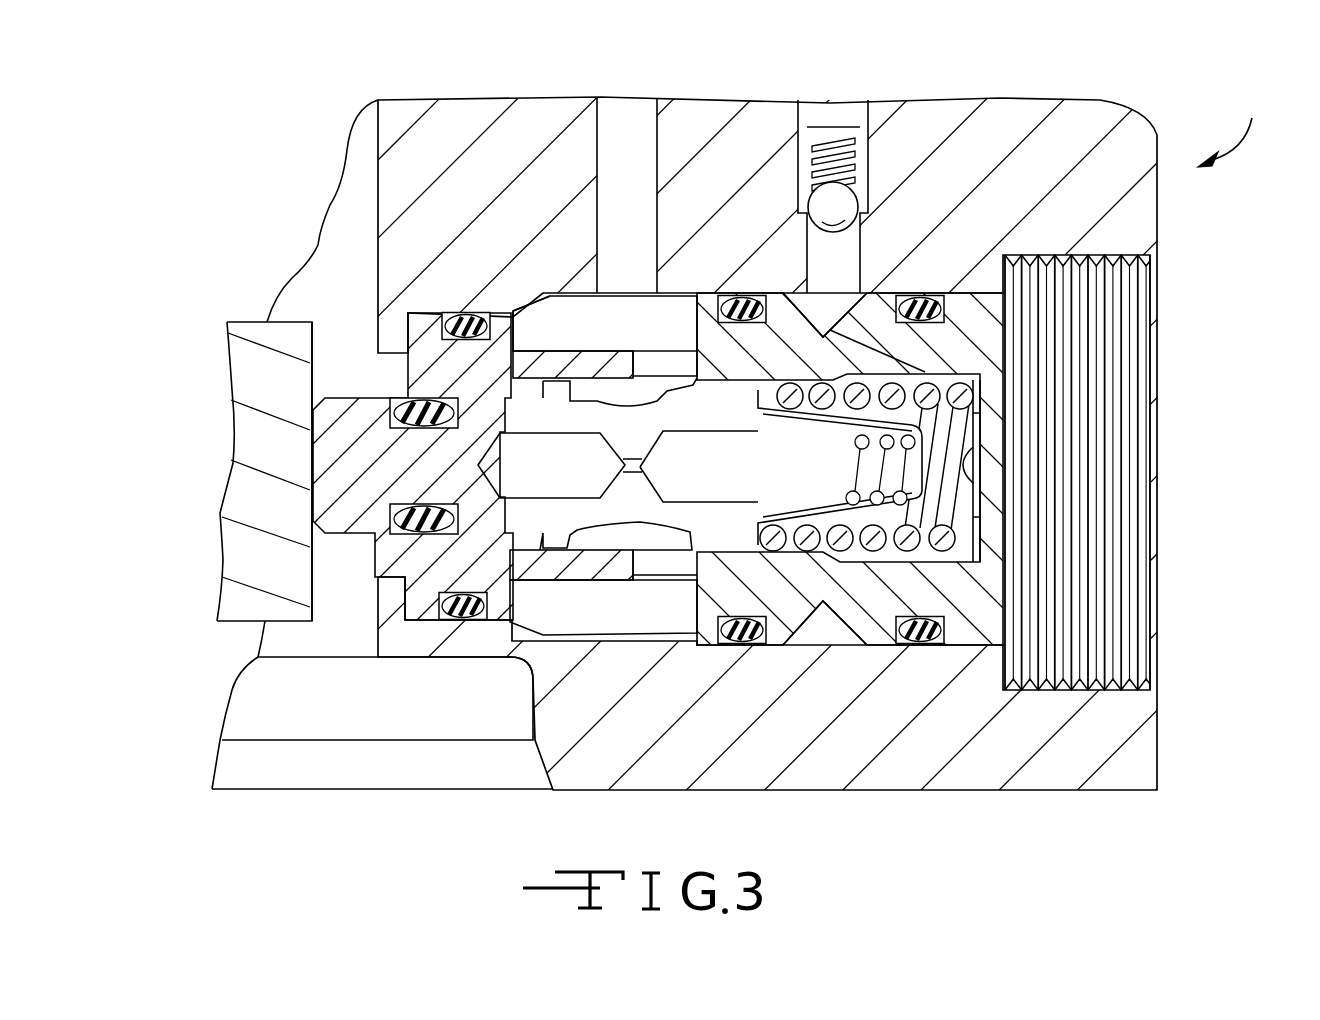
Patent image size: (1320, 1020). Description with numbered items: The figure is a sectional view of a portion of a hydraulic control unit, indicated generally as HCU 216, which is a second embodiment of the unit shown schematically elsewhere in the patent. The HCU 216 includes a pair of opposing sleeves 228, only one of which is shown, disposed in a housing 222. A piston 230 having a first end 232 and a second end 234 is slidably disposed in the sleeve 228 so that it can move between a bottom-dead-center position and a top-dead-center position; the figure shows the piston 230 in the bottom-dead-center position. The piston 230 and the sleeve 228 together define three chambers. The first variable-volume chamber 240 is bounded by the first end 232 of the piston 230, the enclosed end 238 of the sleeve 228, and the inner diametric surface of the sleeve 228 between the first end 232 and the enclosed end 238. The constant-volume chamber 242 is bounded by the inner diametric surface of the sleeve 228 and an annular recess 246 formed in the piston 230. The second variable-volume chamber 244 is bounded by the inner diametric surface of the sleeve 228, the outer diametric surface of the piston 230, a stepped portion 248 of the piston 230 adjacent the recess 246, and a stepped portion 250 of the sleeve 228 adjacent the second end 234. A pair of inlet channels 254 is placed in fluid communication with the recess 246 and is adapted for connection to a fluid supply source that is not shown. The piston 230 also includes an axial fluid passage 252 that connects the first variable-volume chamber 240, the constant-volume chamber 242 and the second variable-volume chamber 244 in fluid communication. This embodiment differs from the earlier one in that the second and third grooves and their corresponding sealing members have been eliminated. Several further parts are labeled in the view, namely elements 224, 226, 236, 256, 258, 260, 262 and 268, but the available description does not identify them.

The hydraulic control unit (HCU) 216 is at (1250, 119).
The housing 222 is at (1160, 745).
The end plate 224 is at (327, 632).
The mounting block 226 is at (247, 322).
The sleeve 228 is at (1007, 333).
The piston 230 is at (347, 393).
The first end 232 is at (772, 380).
The second end 234 is at (310, 505).
The spring seat 236 is at (958, 562).
The enclosed end 238 is at (960, 455).
The first variable-volume chamber 240 is at (960, 513).
The constant-volume chamber 242 is at (583, 391).
The second variable-volume chamber 244 is at (527, 587).
The annular recess 246 is at (630, 408).
The stepped portion of piston 248 is at (538, 392).
The stepped portion of sleeve 250 is at (477, 313).
The axial fluid passage 252 is at (567, 498).
The inlet channels 254 is at (647, 351).
The O-ring seal 256 is at (870, 328).
The check ball 258 is at (850, 203).
The ball 260 is at (783, 468).
The O-ring seal 262 is at (430, 534).
The O-ring seal 268 is at (407, 403).